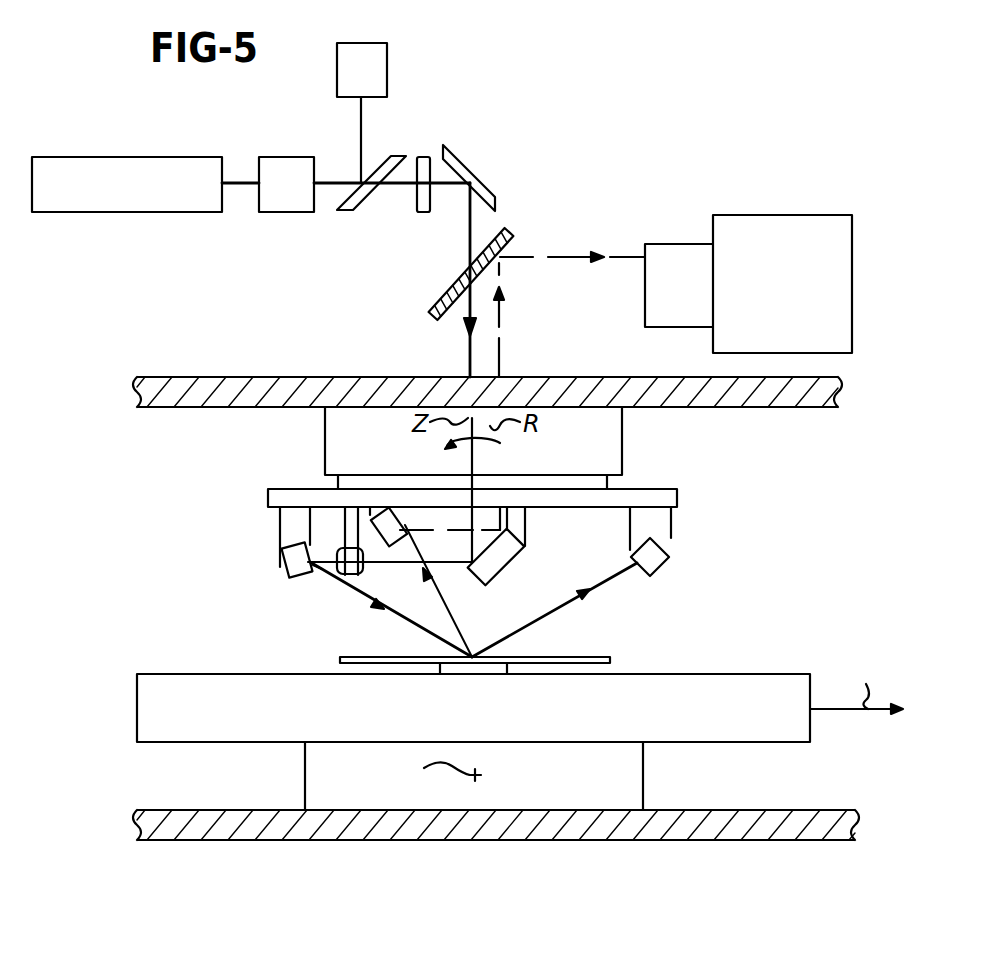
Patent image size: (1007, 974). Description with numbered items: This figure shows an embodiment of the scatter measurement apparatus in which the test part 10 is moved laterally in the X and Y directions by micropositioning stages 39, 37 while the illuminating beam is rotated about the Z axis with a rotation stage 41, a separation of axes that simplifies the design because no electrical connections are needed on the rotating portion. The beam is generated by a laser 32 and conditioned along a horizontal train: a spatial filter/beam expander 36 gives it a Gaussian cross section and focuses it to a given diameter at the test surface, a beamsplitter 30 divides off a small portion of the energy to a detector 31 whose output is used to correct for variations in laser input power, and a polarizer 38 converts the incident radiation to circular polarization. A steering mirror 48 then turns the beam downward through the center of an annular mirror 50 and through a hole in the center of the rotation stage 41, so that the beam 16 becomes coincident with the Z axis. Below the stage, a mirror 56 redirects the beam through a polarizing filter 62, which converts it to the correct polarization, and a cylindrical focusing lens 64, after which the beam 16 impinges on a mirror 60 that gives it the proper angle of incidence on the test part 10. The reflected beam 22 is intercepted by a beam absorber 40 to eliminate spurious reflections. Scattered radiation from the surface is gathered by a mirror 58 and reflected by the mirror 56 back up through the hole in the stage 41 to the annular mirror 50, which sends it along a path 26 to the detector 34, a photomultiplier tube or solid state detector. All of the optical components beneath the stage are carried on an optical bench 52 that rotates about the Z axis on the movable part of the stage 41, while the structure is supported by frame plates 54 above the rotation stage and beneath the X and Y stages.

The test part 10 is at (603, 657).
The beam 16 is at (470, 240).
The reflected beam 22 is at (558, 606).
The path 26 is at (572, 252).
The beamsplitter 30 is at (352, 212).
The detector 31 is at (410, 44).
The laser 32 is at (181, 157).
The detector 34 is at (713, 225).
The spatial filter/beam expander 36 is at (292, 157).
The micropositioning stage 37 is at (779, 674).
The polarizer 38 is at (423, 157).
The micropositioning stage 39 is at (632, 772).
The absorber 40 is at (664, 555).
The rotation stage 41 is at (622, 445).
The steering mirror 48 is at (470, 172).
The annular mirror 50 is at (508, 232).
The optical bench 52 is at (677, 496).
The frame plate 54 is at (832, 409).
The mirror 56 is at (522, 556).
The mirror 58 is at (401, 522).
The mirror 60 is at (282, 572).
The polarizing filter 62 is at (362, 568).
The cylindrical focusing lens 64 is at (322, 568).